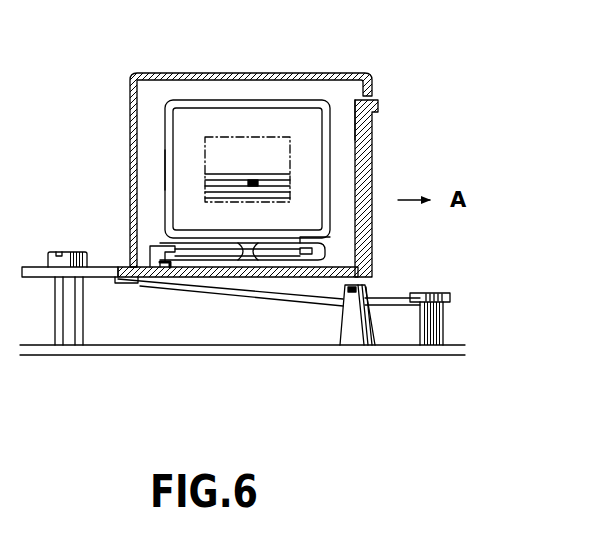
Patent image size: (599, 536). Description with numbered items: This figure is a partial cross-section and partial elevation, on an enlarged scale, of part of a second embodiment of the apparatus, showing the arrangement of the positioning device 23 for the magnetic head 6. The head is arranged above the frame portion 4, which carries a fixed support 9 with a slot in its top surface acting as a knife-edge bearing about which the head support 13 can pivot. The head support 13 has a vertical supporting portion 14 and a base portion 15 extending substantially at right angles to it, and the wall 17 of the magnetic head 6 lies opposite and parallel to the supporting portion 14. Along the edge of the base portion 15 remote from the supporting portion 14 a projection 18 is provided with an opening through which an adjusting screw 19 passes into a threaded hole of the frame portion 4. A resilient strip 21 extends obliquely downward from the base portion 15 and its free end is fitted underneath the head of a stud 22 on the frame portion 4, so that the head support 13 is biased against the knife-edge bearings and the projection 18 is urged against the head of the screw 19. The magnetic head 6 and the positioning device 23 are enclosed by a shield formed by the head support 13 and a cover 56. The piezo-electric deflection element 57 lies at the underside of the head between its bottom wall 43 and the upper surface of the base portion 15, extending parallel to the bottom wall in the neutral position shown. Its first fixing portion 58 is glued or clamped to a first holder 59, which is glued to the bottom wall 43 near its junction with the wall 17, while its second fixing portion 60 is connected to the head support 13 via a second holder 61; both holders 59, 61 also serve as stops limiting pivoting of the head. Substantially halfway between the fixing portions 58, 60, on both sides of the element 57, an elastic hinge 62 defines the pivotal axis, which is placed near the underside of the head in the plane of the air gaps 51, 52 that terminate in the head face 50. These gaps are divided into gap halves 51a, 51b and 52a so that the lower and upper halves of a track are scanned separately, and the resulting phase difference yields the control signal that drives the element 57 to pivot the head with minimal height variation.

The frame portion 4 is at (268, 355).
The magnetic head 6 is at (160, 170).
The fixed support 9 is at (357, 345).
The head support 13 is at (364, 252).
The supporting portion 14 is at (362, 144).
The base portion 15 is at (287, 273).
The wall 17 is at (332, 124).
The projection 18 is at (37, 278).
The adjusting screw 19 is at (62, 252).
The resilient strip 21 is at (395, 305).
The stud 22 is at (444, 328).
The positioning device 23 is at (168, 268).
The bottom wall 43 is at (223, 262).
The head face 50 is at (240, 152).
The air gap 51 is at (242, 179).
The gap half 51a is at (258, 176).
The gap half 51b is at (290, 180).
The air gap 52 is at (242, 194).
The gap half 52a is at (256, 198).
The cover 56 is at (240, 73).
The piezo-electric deflection element 57 is at (222, 246).
The first fixing portion 58 is at (314, 254).
The first holder 59 is at (318, 252).
The second fixing portion 60 is at (172, 246).
The second holder 61 is at (148, 262).
The elastic hinge 62 is at (250, 246).